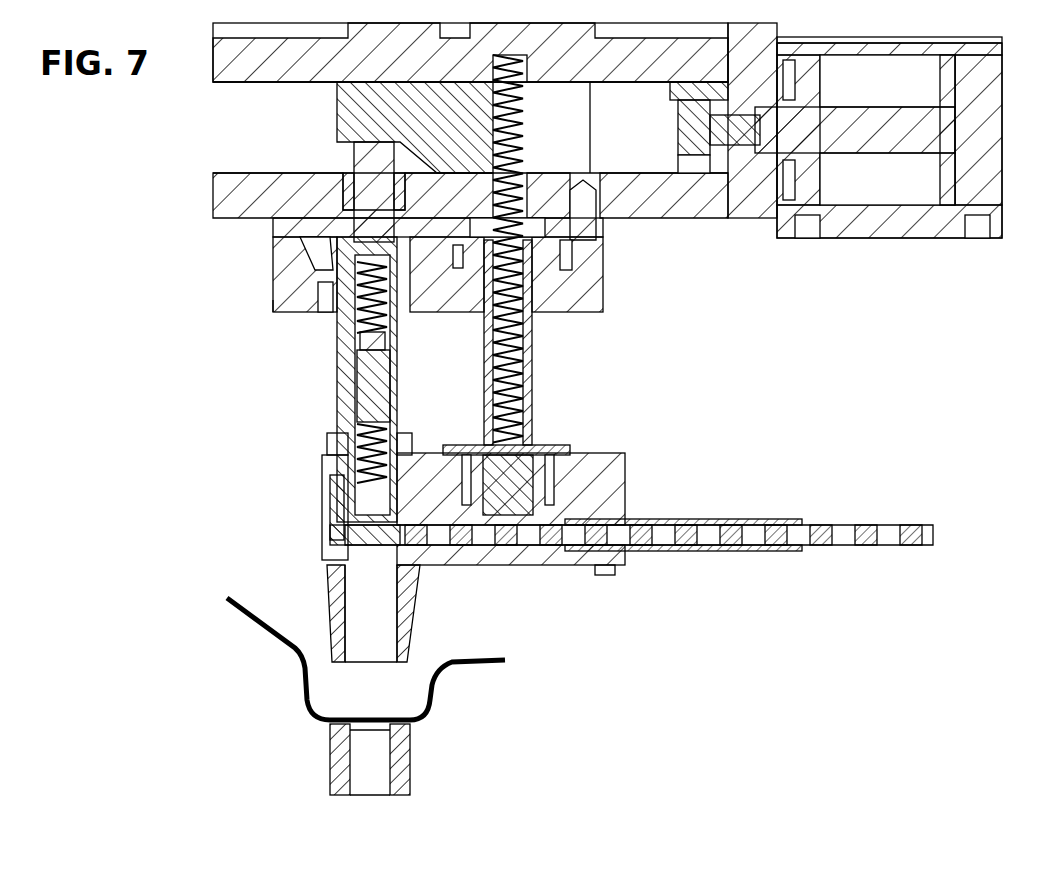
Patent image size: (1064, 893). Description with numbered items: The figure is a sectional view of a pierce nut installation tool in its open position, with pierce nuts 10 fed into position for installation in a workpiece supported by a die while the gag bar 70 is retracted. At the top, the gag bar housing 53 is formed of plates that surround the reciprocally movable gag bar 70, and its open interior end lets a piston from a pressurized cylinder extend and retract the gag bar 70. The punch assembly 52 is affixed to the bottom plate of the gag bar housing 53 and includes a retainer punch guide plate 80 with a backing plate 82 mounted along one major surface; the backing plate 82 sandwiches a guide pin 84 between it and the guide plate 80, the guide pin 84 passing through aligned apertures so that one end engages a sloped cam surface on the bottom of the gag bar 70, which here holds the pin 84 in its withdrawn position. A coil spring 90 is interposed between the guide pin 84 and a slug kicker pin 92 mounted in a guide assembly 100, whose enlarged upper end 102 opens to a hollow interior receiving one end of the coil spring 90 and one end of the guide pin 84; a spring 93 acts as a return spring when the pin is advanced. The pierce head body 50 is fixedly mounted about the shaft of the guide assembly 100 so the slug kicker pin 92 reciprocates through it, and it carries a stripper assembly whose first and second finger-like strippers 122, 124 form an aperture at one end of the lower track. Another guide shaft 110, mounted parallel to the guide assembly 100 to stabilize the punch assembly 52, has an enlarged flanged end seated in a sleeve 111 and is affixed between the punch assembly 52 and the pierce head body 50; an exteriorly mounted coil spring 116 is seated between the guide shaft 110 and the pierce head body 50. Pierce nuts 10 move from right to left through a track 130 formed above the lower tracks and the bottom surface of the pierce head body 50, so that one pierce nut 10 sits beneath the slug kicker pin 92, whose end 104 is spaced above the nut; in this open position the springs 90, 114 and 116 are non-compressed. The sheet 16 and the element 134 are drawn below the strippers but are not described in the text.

The pierce nut 10 is at (898, 525).
The cover sheet 16 is at (492, 659).
The pierce head body 50 is at (318, 491).
The punch assembly 52 is at (262, 305).
The gag bar housing 53 is at (213, 62).
The gag bar 70 is at (338, 110).
The retainer punch guide plate 80 is at (605, 275).
The backing plate 82 is at (698, 220).
The guide pin 84 is at (354, 157).
The coil spring 90 is at (357, 272).
The slug kicker pin 92 is at (392, 380).
The spring 93 is at (355, 422).
The guide assembly 100 is at (345, 372).
The enlarged upper end 102 is at (340, 316).
The end of the slug kicker pin 104 is at (372, 545).
The guide shaft 110 is at (532, 425).
The sleeve 111 is at (540, 290).
The spring 114 is at (393, 330).
The coil spring 116 is at (527, 372).
The first finger like stripper 122 is at (330, 570).
The second finger like stripper 124 is at (420, 578).
The track 130 is at (755, 520).
The receptacle 134 is at (410, 757).